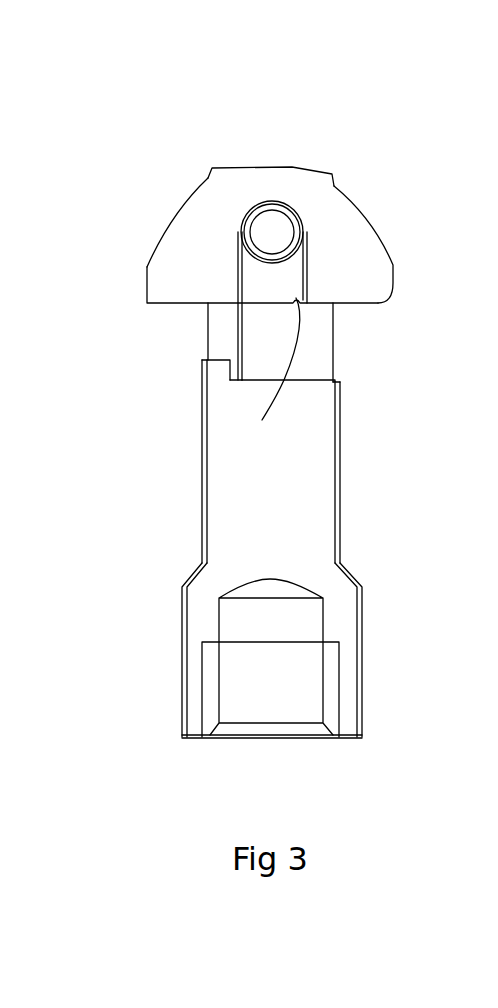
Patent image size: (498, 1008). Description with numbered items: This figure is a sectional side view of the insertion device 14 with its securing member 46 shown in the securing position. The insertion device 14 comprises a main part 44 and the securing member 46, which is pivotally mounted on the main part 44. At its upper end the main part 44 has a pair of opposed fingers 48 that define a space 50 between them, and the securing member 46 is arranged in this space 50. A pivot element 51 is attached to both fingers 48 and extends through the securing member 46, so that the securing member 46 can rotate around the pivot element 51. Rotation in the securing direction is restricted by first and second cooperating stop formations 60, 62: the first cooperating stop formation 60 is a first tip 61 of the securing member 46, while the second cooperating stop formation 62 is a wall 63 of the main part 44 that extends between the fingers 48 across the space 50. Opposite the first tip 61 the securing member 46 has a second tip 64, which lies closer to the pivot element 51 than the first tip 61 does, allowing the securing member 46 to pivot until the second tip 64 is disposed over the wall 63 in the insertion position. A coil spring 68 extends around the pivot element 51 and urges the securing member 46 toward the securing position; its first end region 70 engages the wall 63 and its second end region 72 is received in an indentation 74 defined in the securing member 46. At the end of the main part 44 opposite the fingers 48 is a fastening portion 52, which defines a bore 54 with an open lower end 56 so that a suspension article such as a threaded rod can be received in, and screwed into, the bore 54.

The insertion device 14 is at (382, 683).
The main part 44 is at (318, 423).
The securing member 46 is at (273, 185).
The fingers 48 is at (313, 358).
The space 50 is at (307, 322).
The pivot element 51 is at (273, 232).
The fastening portion 52 is at (347, 620).
The bore 54 is at (220, 677).
The open lower end 56 is at (317, 735).
The first cooperating stop formation 60 is at (163, 290).
The first tip 61 is at (160, 267).
The second cooperating stop formation 62 is at (215, 365).
The wall 63 is at (220, 372).
The second tip 64 is at (377, 283).
The coil spring 68 is at (257, 207).
The first end region 70 is at (235, 330).
The second end region 72 is at (303, 275).
The indentation 74 is at (271, 379).